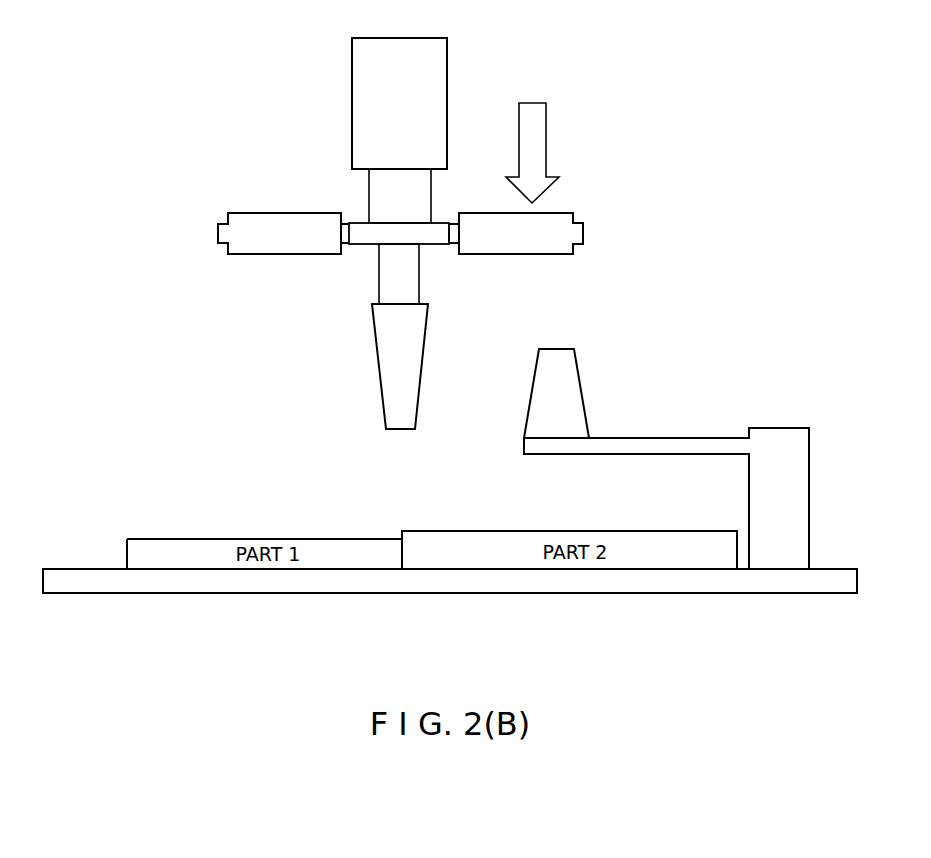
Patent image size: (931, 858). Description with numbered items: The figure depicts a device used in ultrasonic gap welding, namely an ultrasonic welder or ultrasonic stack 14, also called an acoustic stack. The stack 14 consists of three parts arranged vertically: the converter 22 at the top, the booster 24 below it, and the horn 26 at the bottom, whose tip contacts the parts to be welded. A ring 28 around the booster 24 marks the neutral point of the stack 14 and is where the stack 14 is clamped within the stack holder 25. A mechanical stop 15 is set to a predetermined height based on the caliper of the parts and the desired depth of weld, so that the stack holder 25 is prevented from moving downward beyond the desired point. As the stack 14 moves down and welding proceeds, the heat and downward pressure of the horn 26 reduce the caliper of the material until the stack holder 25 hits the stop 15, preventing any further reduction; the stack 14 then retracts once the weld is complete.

The ultrasonic stack 14 is at (478, 235).
The converter 22 is at (337, 38).
The booster 24 is at (389, 235).
The stack holder 25 is at (549, 223).
The horn 26 is at (328, 304).
The ring 28 is at (432, 242).
The mechanical stop 15 is at (596, 378).